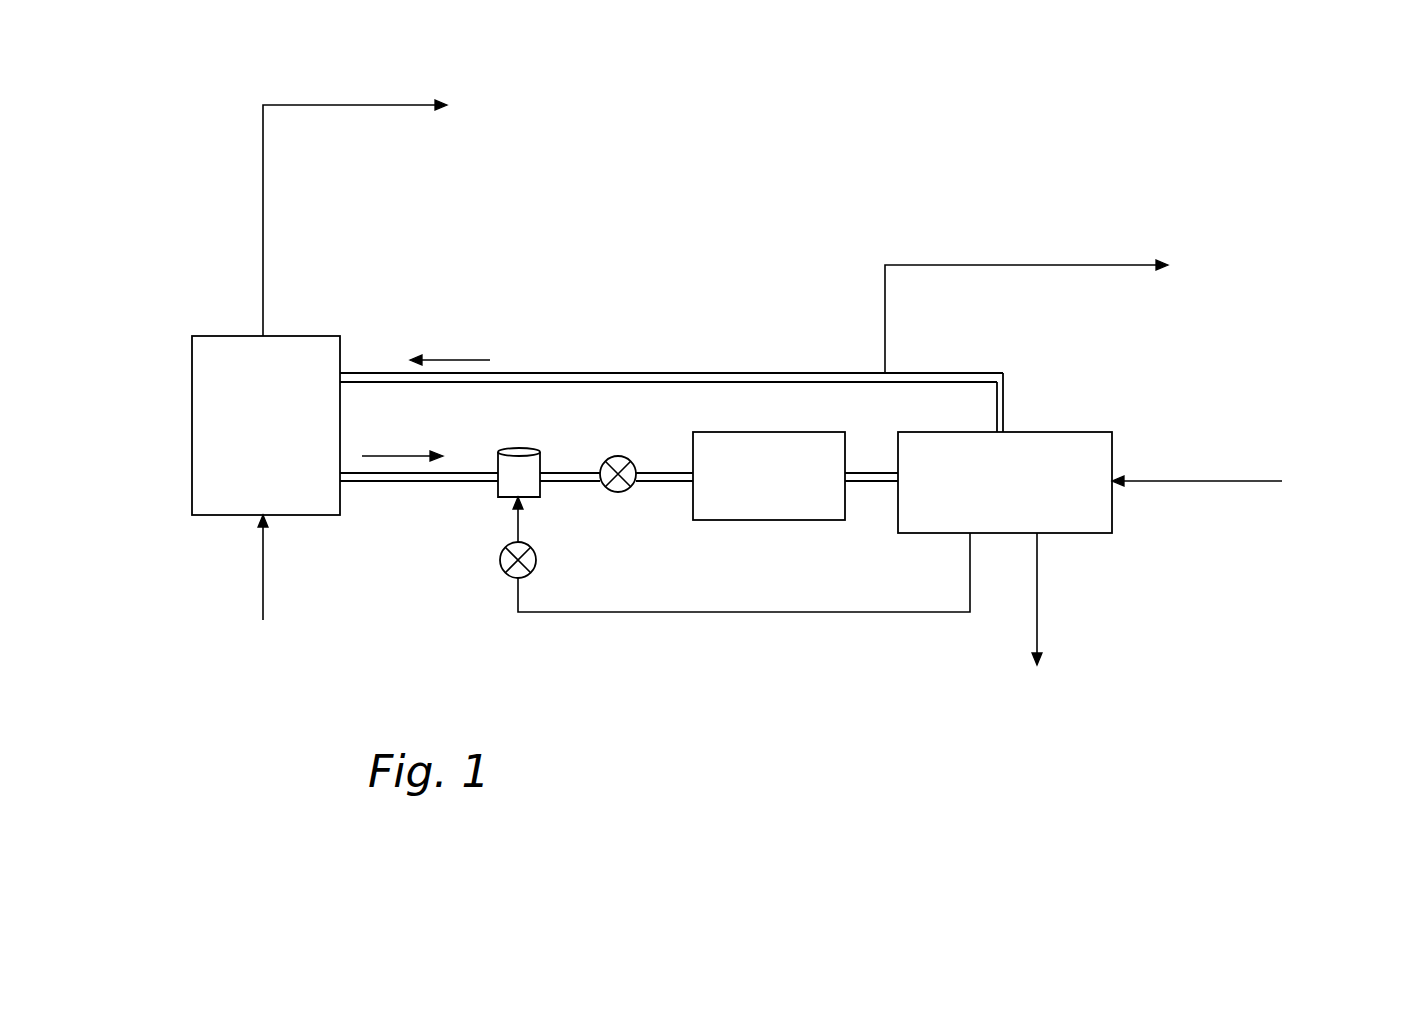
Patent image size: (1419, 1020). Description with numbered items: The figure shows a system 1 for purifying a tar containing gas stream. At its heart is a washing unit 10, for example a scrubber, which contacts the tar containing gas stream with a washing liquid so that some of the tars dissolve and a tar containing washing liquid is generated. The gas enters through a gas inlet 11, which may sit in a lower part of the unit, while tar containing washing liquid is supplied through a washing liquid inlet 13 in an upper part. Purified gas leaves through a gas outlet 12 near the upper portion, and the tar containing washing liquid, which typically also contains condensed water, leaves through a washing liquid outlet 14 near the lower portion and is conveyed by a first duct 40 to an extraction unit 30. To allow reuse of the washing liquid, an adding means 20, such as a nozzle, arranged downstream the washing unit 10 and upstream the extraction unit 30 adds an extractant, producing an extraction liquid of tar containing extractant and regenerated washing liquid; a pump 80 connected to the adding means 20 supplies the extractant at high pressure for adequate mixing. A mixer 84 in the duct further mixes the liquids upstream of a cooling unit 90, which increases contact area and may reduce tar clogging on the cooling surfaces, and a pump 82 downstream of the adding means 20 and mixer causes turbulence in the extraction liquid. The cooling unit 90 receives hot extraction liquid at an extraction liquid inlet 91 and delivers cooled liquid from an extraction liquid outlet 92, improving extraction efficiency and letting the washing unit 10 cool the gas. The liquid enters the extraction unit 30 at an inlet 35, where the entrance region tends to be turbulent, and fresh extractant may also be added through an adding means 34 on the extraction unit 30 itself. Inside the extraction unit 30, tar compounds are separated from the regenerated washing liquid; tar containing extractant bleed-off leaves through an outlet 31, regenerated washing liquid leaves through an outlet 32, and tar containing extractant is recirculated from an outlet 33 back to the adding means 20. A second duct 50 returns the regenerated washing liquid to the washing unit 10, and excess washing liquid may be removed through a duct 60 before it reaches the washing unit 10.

The system 1 is at (192, 218).
The washing unit 10 is at (210, 492).
The gas inlet 11 is at (257, 519).
The gas outlet 12 is at (267, 332).
The washing liquid inlet 13 is at (343, 364).
The washing liquid outlet 14 is at (341, 485).
The adding means 20 is at (522, 498).
The extraction unit 30 is at (1085, 510).
The outlet for tar containing extractant bleed-off 31 is at (1037, 537).
The outlet for regenerated washing liquid 32 is at (1006, 430).
The outlet for tar containing extractant 33 is at (968, 535).
The adding means 34 is at (1115, 478).
The inlet 35 is at (896, 470).
The first duct 40 is at (448, 473).
The second duct 50 is at (558, 373).
The duct 60 is at (883, 373).
The pump 80 is at (500, 570).
The pump 82 is at (620, 490).
The mixer 84 is at (540, 462).
The cooling unit 90 is at (707, 448).
The extraction liquid inlet 91 is at (692, 468).
The extraction liquid outlet 92 is at (847, 482).